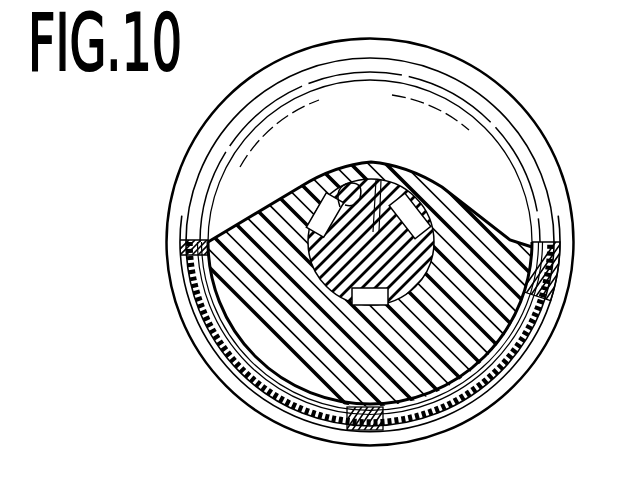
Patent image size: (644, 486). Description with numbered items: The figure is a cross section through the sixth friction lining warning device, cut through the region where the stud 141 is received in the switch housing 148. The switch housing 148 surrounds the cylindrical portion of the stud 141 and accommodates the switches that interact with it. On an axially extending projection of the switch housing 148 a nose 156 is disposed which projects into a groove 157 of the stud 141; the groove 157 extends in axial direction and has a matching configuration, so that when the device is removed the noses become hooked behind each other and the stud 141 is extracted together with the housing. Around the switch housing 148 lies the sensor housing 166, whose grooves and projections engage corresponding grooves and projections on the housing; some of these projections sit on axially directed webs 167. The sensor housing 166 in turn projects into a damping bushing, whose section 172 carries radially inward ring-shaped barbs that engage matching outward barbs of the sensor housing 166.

The stud 141 is at (437, 243).
The switch housing 148 is at (514, 347).
The nose 156 is at (326, 209).
The groove 157 is at (369, 184).
The sensor housing 166 is at (478, 400).
The webs 167 is at (181, 246).
The section 172 is at (216, 368).